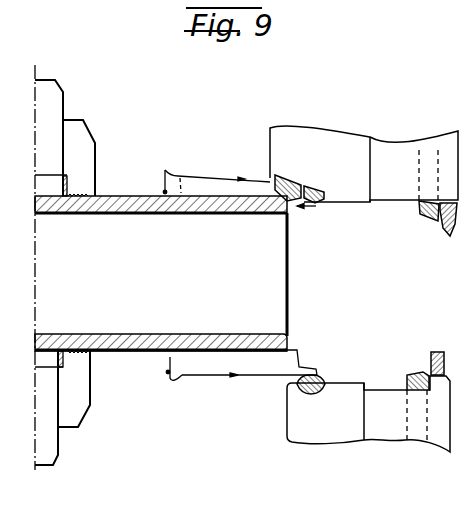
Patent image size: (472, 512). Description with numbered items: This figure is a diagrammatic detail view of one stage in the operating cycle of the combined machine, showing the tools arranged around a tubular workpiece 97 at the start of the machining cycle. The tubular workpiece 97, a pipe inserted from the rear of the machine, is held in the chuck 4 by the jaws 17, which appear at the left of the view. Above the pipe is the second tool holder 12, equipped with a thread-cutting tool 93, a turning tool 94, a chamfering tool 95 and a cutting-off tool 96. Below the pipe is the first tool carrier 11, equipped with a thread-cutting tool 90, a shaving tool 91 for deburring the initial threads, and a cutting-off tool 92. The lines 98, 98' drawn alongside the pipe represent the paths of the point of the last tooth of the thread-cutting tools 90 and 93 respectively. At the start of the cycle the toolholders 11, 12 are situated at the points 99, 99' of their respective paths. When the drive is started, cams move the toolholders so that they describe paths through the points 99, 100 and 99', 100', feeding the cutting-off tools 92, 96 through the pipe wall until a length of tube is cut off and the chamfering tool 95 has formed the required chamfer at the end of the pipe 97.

The chuck 4 is at (52, 84).
The jaws 17 is at (82, 134).
The tubular workpiece 97 is at (128, 352).
The path of the point of the last tooth of tool 90 98 is at (249, 375).
The path of the point of the last tooth of tool 93 98' is at (217, 169).
The starting point of toolholder path 99 is at (173, 379).
The starting point of toolholder path 99' is at (168, 171).
The toolholder path point 100 is at (158, 361).
The toolholder path point 100' is at (150, 188).
The second tool holder 12 is at (364, 164).
The first tool carrier 11 is at (368, 414).
The thread-cutting tool 90 is at (312, 395).
The shaving tool 91 is at (414, 374).
The cutting-off tool 92 is at (441, 351).
The thread-cutting tool 93 is at (322, 200).
The turning tool 94 is at (283, 175).
The chamfering tool 95 is at (423, 214).
The cutting-off tool 96 is at (446, 231).